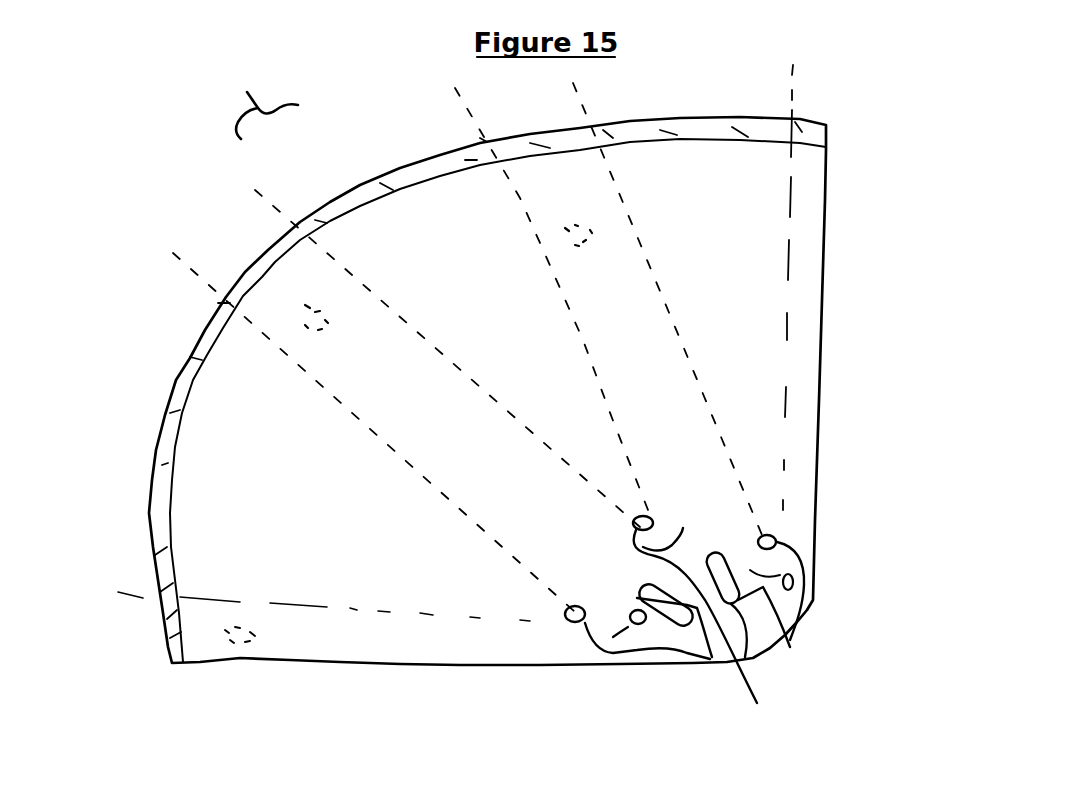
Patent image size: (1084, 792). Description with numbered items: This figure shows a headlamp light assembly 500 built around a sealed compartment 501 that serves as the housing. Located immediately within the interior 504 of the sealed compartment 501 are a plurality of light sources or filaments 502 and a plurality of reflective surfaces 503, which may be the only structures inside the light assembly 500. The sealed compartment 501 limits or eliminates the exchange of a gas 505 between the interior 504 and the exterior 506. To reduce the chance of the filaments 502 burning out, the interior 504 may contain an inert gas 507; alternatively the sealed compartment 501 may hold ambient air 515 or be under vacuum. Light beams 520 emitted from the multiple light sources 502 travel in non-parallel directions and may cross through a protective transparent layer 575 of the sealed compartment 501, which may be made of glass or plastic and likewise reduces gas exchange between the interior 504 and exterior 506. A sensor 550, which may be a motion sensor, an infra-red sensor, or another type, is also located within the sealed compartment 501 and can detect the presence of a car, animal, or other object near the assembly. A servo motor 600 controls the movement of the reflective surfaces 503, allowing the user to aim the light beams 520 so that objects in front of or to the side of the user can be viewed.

The light assembly 500 is at (256, 99).
The sealed compartment 501 is at (770, 200).
The light sources (filaments) 502 is at (573, 622).
The reflective surfaces 503 is at (620, 602).
The interior 504 is at (207, 503).
The gas 505 is at (220, 628).
The exterior 506 is at (158, 320).
The inert gas 507 is at (570, 215).
The ambient air 515 is at (293, 310).
The light beams 520 is at (392, 598).
The sensor 550 is at (793, 612).
The protective transparent layer 575 is at (158, 422).
The servo motor 600 is at (640, 625).